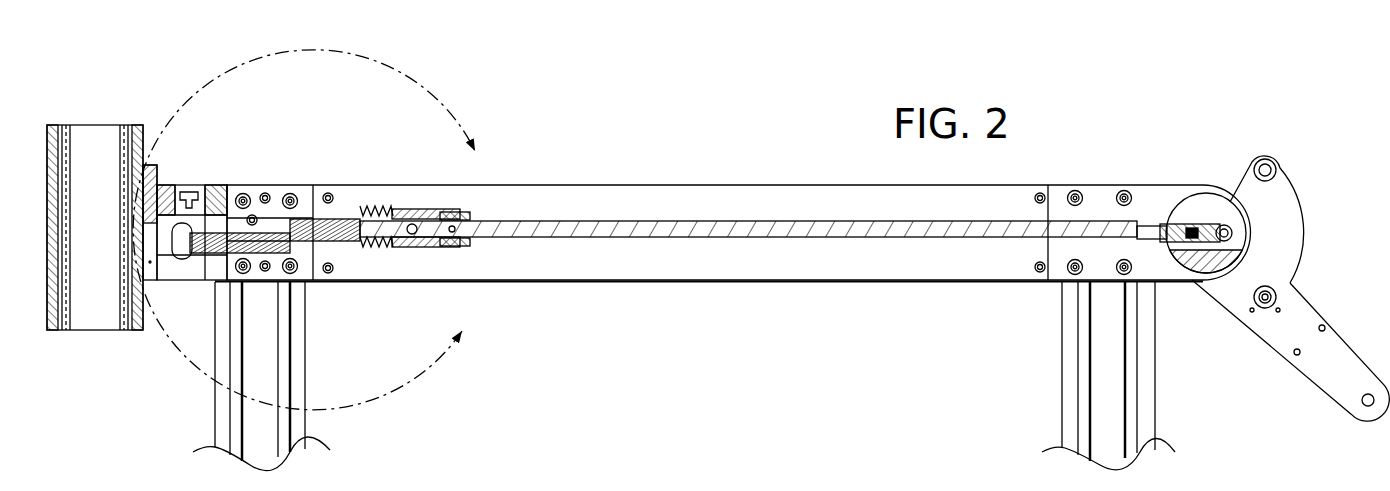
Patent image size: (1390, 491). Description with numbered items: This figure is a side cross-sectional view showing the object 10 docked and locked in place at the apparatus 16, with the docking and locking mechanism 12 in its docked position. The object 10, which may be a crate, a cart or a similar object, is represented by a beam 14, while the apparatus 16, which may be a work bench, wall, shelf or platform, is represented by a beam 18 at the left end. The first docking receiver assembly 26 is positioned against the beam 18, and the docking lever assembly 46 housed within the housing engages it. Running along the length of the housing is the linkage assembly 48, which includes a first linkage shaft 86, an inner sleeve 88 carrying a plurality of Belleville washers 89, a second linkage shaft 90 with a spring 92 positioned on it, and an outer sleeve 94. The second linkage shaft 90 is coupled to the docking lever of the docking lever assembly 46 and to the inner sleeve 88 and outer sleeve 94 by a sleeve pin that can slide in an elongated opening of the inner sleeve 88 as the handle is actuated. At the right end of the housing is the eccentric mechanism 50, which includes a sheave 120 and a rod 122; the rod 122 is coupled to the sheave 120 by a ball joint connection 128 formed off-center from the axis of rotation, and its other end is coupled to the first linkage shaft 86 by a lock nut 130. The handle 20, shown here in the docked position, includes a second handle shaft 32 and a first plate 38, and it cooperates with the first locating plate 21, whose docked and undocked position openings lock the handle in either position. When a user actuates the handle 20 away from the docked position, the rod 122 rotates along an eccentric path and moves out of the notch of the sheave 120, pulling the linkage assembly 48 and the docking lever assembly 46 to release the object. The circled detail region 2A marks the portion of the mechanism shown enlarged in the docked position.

The object 10 is at (760, 346).
The docking and locking mechanism 12 is at (1217, 152).
The beams 14 is at (1062, 372).
The apparatus 16 is at (95, 338).
The beams 18 is at (58, 125).
The handle 20 is at (1313, 282).
The first locating plate 21 is at (1287, 232).
The first docking receiver assembly 26 is at (170, 180).
The second handle shaft 32 is at (1366, 406).
The first plate 38 is at (1333, 376).
The docking lever assembly 46 is at (197, 260).
The linkage assembly 48 is at (505, 217).
The eccentric mechanism 50 is at (1182, 194).
The first linkage shaft 86 is at (522, 238).
The inner sleeve 88 is at (400, 242).
The Belleville washers 89 is at (376, 203).
The second linkage shaft 90 is at (343, 226).
The spring 92 is at (307, 186).
The outer sleeve 94 is at (434, 210).
The sheave 120 is at (1217, 263).
The rod 122 is at (1180, 266).
The ball joint connection 128 is at (1245, 207).
The lock nut 130 is at (1183, 193).
The section line 2A is at (328, 230).